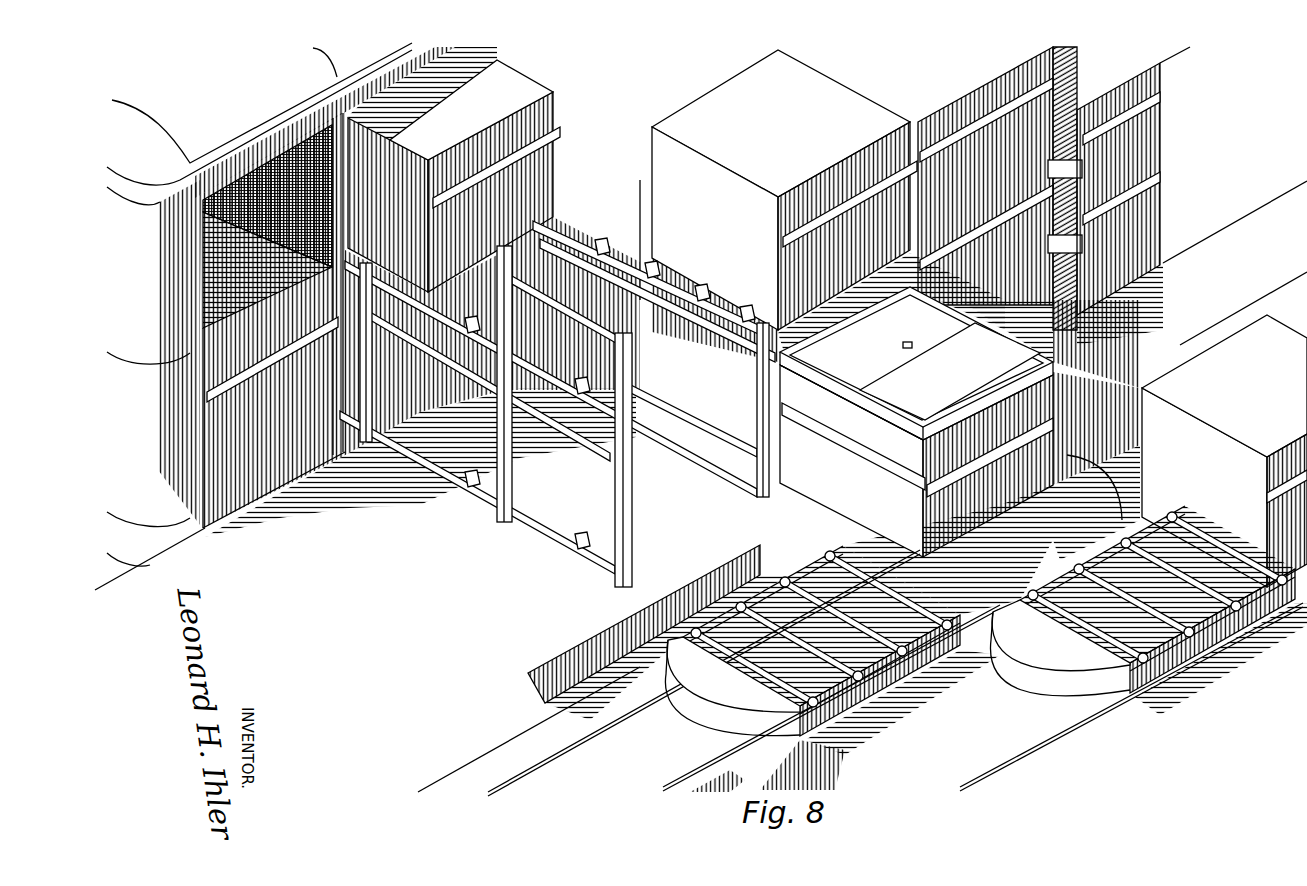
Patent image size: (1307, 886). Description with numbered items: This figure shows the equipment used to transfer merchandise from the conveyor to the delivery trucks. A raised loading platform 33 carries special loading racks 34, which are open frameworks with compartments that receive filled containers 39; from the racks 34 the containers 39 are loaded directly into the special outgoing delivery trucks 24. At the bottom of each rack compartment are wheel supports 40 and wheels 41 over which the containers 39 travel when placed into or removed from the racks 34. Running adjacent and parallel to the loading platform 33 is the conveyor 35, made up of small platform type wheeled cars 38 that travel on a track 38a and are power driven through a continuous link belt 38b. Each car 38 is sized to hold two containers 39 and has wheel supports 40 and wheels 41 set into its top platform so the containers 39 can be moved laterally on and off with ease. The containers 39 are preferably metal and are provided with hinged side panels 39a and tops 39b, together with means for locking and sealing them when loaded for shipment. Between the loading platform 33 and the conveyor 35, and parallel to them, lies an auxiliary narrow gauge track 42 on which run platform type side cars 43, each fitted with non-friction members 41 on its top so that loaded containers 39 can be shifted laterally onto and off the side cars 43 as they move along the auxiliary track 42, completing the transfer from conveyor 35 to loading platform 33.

The special outgoing delivery truck 24 is at (238, 84).
The raised loading platform 33 is at (570, 614).
The loading rack 34 is at (490, 516).
The conveyor 35 is at (1162, 682).
The platform type wheeled car 38 is at (1078, 756).
The track 38a is at (1133, 718).
The continuous link belt 38b is at (982, 725).
The merchandise container 39 is at (748, 250).
The hinged side panel 39a is at (858, 425).
The top 39b is at (916, 363).
The wheel support 40 is at (743, 489).
The wheel 41 is at (692, 458).
The auxiliary narrow gauge track 42 is at (565, 749).
The side car 43 is at (705, 688).